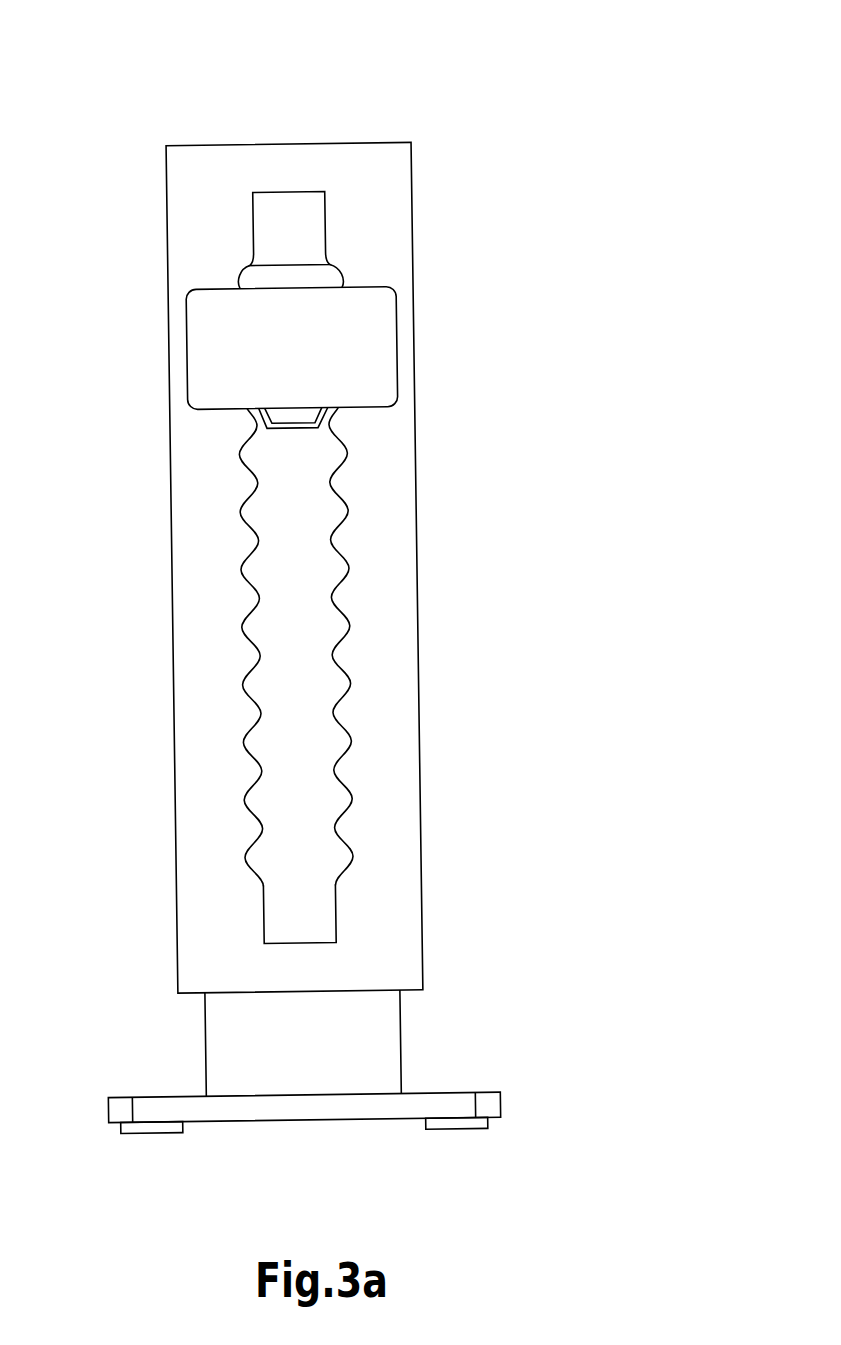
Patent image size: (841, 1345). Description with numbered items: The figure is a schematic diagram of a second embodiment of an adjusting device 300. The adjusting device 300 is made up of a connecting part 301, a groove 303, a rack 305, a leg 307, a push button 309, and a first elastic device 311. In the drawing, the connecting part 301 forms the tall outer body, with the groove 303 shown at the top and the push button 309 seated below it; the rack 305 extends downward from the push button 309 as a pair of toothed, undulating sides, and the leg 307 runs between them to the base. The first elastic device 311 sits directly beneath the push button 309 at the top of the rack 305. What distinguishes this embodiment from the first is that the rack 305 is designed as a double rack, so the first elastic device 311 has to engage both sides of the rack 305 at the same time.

The adjusting device 300 is at (292, 567).
The connecting part 301 is at (187, 200).
The groove 303 is at (310, 242).
The rack 305 is at (258, 489).
The leg 307 is at (283, 750).
The push button 309 is at (237, 298).
The first elastic device 311 is at (322, 418).